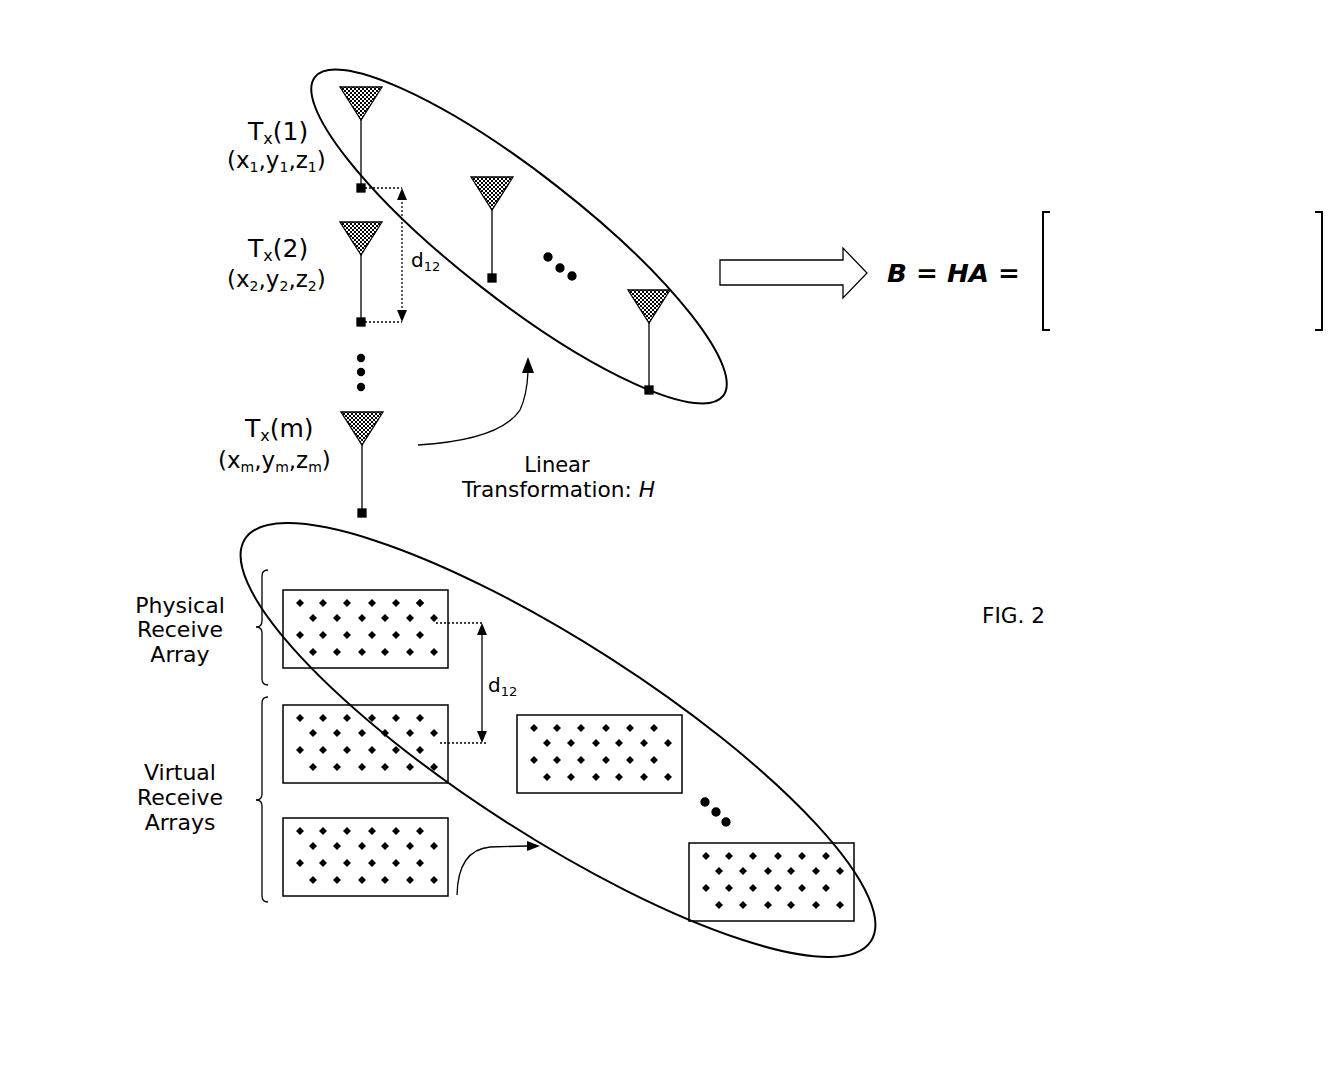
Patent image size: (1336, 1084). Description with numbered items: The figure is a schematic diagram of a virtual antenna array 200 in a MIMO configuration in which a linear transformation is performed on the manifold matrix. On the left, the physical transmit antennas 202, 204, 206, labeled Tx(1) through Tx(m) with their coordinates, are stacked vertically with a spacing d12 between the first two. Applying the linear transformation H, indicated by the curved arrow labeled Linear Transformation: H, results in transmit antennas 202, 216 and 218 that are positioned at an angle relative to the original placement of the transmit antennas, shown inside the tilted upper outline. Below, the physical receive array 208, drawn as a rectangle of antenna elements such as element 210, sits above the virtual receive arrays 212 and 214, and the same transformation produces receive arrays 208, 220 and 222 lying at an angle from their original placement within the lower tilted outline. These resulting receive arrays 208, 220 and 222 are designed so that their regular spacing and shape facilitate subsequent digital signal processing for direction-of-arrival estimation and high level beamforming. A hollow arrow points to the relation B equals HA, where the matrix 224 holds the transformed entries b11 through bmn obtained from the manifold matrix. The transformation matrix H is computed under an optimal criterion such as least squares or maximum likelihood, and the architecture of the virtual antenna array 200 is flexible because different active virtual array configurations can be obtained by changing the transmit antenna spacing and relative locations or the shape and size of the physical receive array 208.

The virtual antenna array 200 is at (200, 92).
The transmit antenna 202 is at (355, 86).
The transmit antenna 204 is at (353, 240).
The transmit antenna 206 is at (348, 410).
The physical receive array 208 is at (340, 590).
The receive antenna element of physical receive array 210 is at (427, 603).
The first virtual receive array 212 is at (450, 774).
The second virtual receive array 214 is at (448, 868).
The transmit antenna 216 is at (510, 178).
The transmit antenna 218 is at (645, 288).
The receive array 220 is at (610, 715).
The receive array 222 is at (812, 842).
The matrix B of virtual array signals (B = HA) 224 is at (1040, 230).